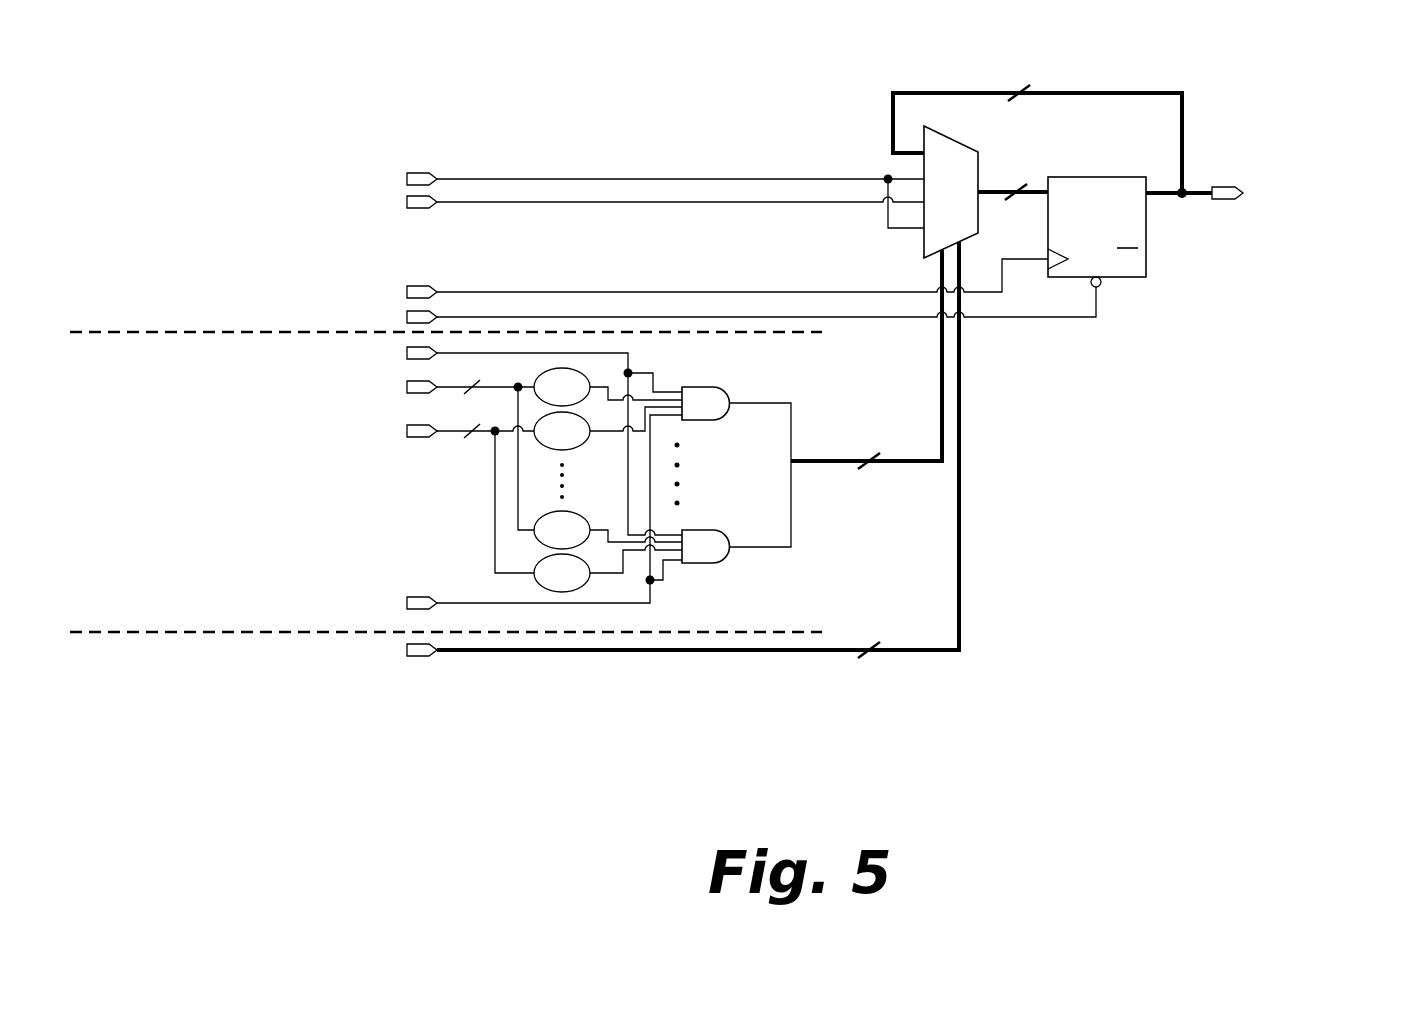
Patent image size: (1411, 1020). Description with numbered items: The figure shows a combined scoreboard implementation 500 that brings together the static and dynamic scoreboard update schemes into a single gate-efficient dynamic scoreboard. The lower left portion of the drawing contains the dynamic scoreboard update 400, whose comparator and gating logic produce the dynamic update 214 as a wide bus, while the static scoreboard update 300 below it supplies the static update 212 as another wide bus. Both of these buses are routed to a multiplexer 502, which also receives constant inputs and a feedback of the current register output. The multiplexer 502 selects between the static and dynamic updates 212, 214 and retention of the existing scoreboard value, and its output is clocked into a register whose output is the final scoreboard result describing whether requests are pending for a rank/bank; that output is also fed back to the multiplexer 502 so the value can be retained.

The combined scoreboard implementation 500 is at (212, 54).
The multiplexer 502 is at (844, 114).
The implementation of dynamic update 400 is at (154, 395).
The dynamic update 214 is at (879, 397).
The static scoreboard update logic 300 is at (152, 740).
The static update 212 is at (887, 604).